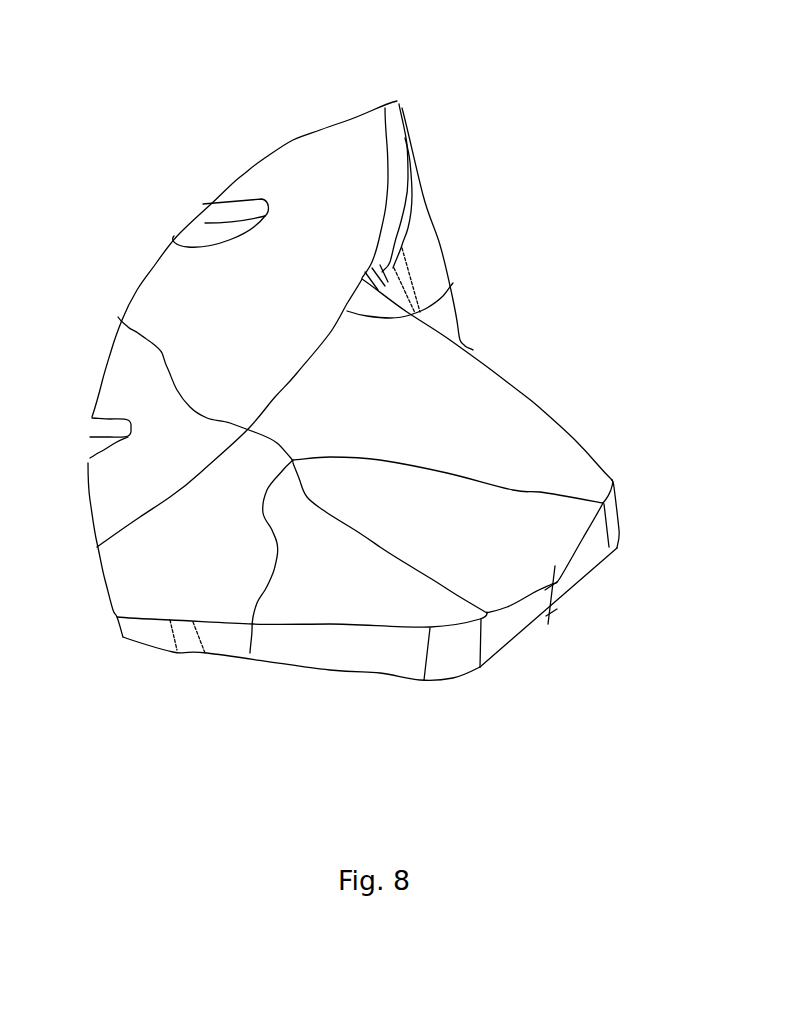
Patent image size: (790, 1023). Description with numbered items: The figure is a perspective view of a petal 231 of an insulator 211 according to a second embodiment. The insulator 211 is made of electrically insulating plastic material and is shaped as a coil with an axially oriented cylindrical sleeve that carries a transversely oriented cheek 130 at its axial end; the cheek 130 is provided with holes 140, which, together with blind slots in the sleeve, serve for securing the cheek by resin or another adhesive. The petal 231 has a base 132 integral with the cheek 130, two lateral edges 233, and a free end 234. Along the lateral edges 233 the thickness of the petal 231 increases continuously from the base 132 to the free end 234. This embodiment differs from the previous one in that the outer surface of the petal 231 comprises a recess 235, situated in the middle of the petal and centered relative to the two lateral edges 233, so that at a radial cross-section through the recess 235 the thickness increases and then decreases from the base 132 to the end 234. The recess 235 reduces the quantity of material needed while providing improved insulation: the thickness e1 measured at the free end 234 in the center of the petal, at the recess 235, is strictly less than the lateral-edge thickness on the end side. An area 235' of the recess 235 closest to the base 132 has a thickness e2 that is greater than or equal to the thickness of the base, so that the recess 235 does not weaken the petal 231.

The insulator 211 is at (352, 78).
The holes 140 is at (207, 217).
The cheek 130 is at (373, 160).
The base 132 is at (453, 283).
The petal 231 is at (453, 385).
The lateral edges 233 is at (528, 397).
The recess 235 is at (474, 520).
The area of the recess closest to the base 235' is at (255, 591).
The free end 234 is at (580, 573).
The thickness at the end and center of the petal e1 is at (549, 612).
The thickness of the recess area closest to the base e2 is at (118, 317).